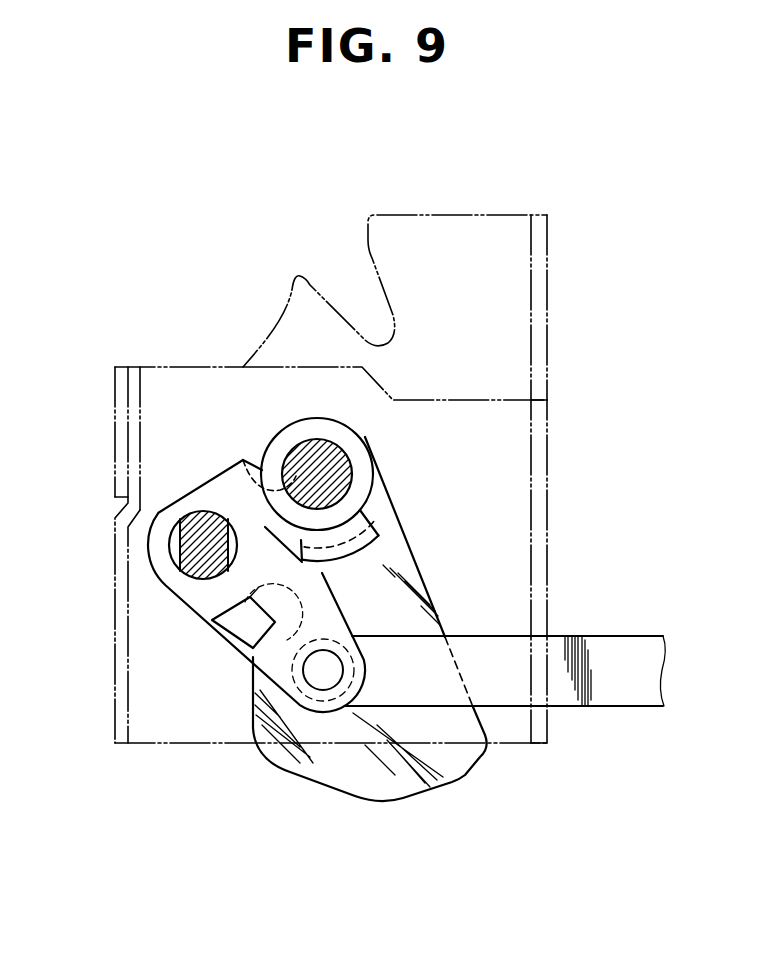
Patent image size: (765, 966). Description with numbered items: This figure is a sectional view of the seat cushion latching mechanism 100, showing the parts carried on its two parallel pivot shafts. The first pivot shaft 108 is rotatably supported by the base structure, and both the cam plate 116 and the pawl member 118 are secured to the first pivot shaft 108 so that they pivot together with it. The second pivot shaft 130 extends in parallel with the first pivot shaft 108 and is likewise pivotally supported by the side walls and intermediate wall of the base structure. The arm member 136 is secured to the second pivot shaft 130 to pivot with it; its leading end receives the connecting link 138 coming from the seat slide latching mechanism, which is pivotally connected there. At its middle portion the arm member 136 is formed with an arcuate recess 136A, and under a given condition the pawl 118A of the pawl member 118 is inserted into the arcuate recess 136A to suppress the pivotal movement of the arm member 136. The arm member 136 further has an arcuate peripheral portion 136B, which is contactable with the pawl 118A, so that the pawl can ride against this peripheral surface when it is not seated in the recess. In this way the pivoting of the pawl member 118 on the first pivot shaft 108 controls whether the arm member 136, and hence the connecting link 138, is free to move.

The seat cushion latching mechanism 100 is at (584, 216).
The first pivot shaft 108 is at (337, 462).
The cam plate 116 is at (377, 793).
The pawl member 118 is at (290, 432).
The pawl 118A is at (397, 556).
The second pivot shaft 130 is at (170, 546).
The arm member 136 is at (196, 486).
The arcuate recess 136A is at (258, 578).
The arcuate peripheral portion 136B is at (227, 458).
The connecting link 138 is at (610, 697).